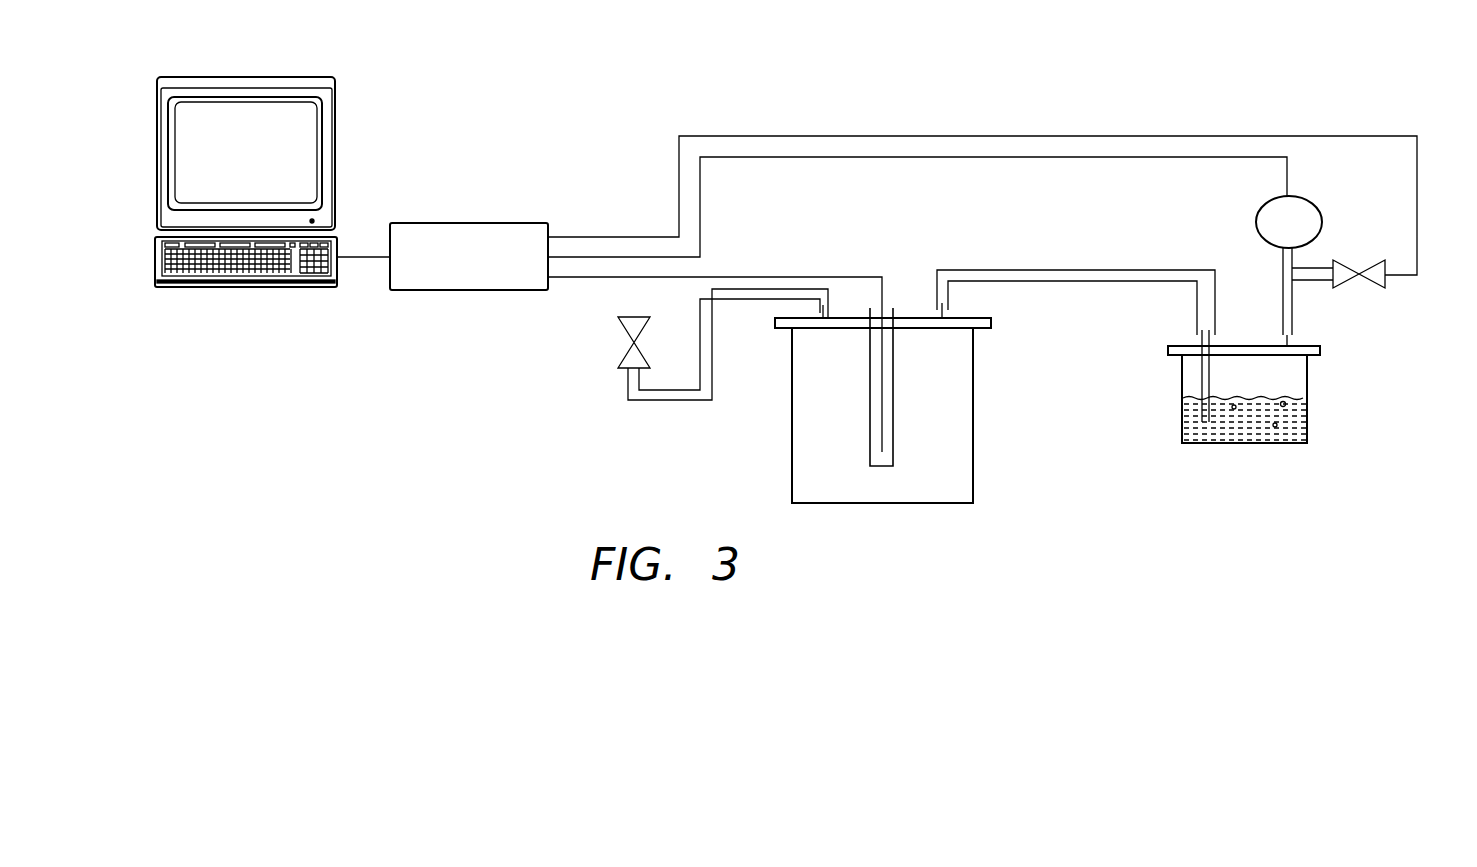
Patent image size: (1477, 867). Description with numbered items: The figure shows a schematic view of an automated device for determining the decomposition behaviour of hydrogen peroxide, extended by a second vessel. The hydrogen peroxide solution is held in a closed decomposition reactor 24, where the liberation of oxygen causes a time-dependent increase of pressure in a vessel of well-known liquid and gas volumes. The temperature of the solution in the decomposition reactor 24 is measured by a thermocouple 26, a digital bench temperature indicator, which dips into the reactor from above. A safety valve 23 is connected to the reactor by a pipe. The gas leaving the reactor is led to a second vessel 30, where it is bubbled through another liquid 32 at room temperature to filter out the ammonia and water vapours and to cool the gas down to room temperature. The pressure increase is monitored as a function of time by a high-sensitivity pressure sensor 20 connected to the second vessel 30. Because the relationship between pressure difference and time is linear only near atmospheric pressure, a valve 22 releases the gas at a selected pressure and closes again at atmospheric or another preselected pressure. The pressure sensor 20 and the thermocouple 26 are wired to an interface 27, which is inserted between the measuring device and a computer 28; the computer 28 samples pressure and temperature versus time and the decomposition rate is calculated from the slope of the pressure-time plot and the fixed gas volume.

The pressure sensor 20 is at (1268, 206).
The valve 22 is at (1378, 288).
The safety valve 23 is at (622, 330).
The decomposition reactor 24 is at (890, 503).
The thermocouple 26 is at (876, 388).
The interface 27 is at (458, 223).
The computer 28 is at (256, 77).
The second vessel 30 is at (1182, 378).
The liquid 32 is at (1240, 432).